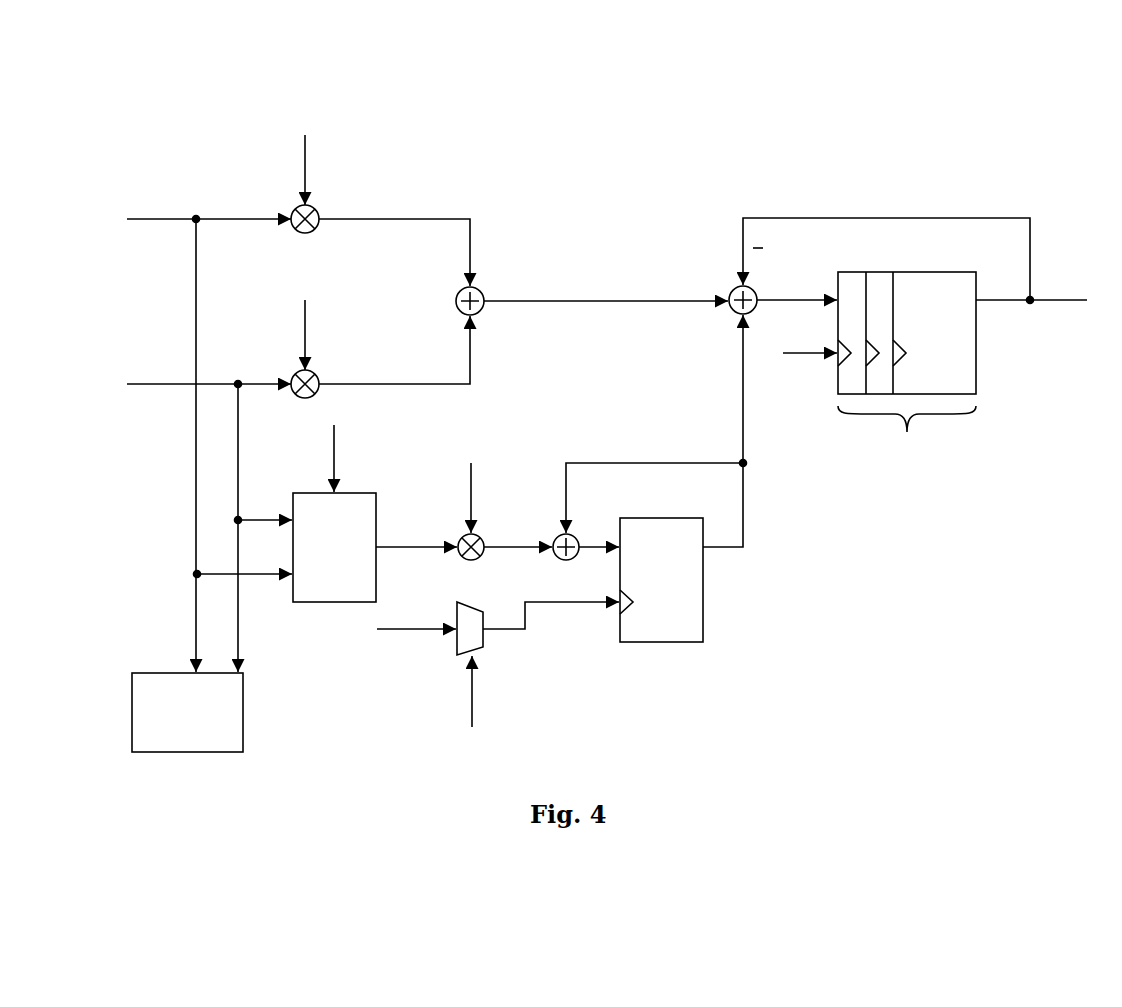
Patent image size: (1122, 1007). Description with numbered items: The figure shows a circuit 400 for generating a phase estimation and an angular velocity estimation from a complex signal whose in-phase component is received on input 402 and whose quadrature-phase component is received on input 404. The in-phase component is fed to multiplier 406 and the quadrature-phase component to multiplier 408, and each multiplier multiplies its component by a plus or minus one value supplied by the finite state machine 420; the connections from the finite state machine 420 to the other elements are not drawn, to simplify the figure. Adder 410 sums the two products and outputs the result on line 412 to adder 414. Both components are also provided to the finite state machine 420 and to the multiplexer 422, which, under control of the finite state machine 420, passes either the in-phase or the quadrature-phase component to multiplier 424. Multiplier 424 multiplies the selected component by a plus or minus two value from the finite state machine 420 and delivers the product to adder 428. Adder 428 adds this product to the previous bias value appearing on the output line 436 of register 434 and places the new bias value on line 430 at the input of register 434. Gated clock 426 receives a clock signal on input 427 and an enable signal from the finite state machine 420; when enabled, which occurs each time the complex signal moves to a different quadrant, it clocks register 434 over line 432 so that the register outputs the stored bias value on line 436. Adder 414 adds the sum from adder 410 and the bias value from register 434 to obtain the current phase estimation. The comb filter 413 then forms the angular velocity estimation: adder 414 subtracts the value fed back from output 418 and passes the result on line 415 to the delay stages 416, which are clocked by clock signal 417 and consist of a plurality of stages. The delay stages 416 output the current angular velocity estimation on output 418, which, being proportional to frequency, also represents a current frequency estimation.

The circuit 400 is at (212, 98).
The input 402 is at (127, 218).
The input 404 is at (127, 383).
The multiplier 406 is at (314, 210).
The multiplier 408 is at (314, 375).
The adder 410 is at (480, 291).
The line 412 is at (607, 301).
The comb filter 413 is at (968, 193).
The adder 414 is at (757, 291).
The line 415 is at (800, 299).
The delay stages 416 is at (923, 272).
The clock signal 417 is at (803, 357).
The output 418 is at (1003, 301).
The finite state machine 420 is at (243, 708).
The multiplexer 422 is at (376, 500).
The multiplier 424 is at (484, 540).
The gated clock 426 is at (473, 610).
The input 427 is at (400, 632).
The adder 428 is at (573, 537).
The line 430 is at (590, 542).
The line 432 is at (568, 605).
The register 434 is at (703, 585).
The output line 436 is at (743, 492).